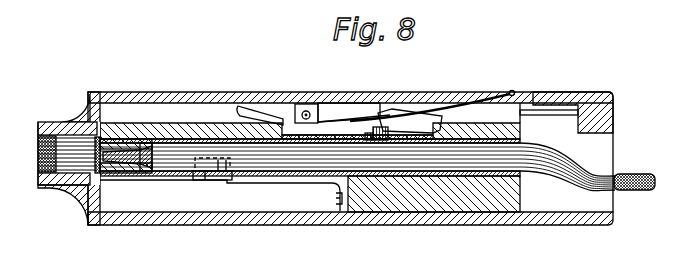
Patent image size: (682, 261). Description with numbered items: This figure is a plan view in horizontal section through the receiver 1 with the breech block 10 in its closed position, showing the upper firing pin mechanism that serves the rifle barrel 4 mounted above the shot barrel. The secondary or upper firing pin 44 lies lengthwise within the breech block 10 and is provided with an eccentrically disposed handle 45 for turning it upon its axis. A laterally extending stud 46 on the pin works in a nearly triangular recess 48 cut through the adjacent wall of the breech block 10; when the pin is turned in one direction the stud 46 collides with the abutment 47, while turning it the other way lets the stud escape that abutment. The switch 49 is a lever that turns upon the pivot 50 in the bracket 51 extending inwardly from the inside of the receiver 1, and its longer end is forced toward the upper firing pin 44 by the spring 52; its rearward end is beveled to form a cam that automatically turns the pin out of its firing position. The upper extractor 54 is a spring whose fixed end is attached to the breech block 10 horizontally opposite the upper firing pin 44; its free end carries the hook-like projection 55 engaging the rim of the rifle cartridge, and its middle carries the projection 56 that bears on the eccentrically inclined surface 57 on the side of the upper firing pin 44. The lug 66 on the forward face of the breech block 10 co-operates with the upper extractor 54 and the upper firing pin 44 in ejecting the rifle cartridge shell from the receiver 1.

The receiver 1 is at (340, 225).
The rifle barrel 4 is at (40, 186).
The breech block 10 is at (520, 196).
The upper firing pin 44 is at (565, 155).
The handle 45 is at (656, 182).
The stud 46 is at (403, 113).
The abutment 47 is at (605, 121).
The recess 48 is at (380, 124).
The switch 49 is at (353, 115).
The pivot 50 is at (308, 112).
The bracket 51 is at (298, 110).
The spring 52 is at (460, 104).
The upper extractor 54 is at (284, 182).
The hook-like projection 55 is at (80, 197).
The projection 56 is at (208, 177).
The eccentrically inclined surface 57 is at (222, 174).
The lug 66 is at (90, 125).